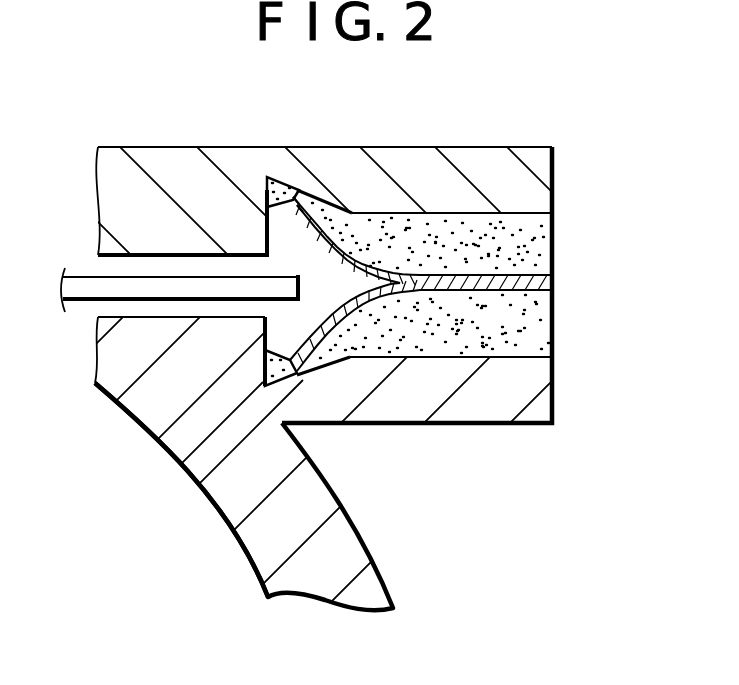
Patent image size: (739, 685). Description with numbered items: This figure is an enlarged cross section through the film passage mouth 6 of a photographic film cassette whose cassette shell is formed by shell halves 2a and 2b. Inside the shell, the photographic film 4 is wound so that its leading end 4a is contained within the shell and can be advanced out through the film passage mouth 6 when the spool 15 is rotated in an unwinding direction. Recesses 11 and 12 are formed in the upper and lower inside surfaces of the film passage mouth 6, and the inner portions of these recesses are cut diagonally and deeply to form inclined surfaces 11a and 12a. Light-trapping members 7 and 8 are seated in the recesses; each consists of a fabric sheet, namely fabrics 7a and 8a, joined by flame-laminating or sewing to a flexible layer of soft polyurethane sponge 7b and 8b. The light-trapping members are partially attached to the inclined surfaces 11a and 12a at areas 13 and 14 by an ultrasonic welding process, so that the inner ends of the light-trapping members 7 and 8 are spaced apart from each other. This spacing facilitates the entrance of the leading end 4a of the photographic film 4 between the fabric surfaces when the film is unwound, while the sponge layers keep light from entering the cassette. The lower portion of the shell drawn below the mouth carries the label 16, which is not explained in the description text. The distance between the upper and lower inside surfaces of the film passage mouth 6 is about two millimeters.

The shell half 2a is at (140, 146).
The shell half 2b is at (367, 583).
The photographic film 4 is at (82, 274).
The leading end 4a is at (202, 277).
The film passage mouth 6 is at (562, 220).
The light-trapping member 7 is at (644, 178).
The fabric 7a is at (551, 273).
The soft polyurethane sponge 7b is at (552, 238).
The light-trapping member 8 is at (642, 264).
The fabric 8a is at (552, 283).
The soft polyurethane sponge 8b is at (551, 330).
The recess 11 is at (494, 214).
The inclined surface 11a is at (368, 214).
The recess 12 is at (480, 357).
The inclined surface 12a is at (346, 358).
The area 13 is at (290, 184).
The area 14 is at (292, 377).
The spool 15 is at (270, 178).
The lower housing portion 16 is at (190, 460).